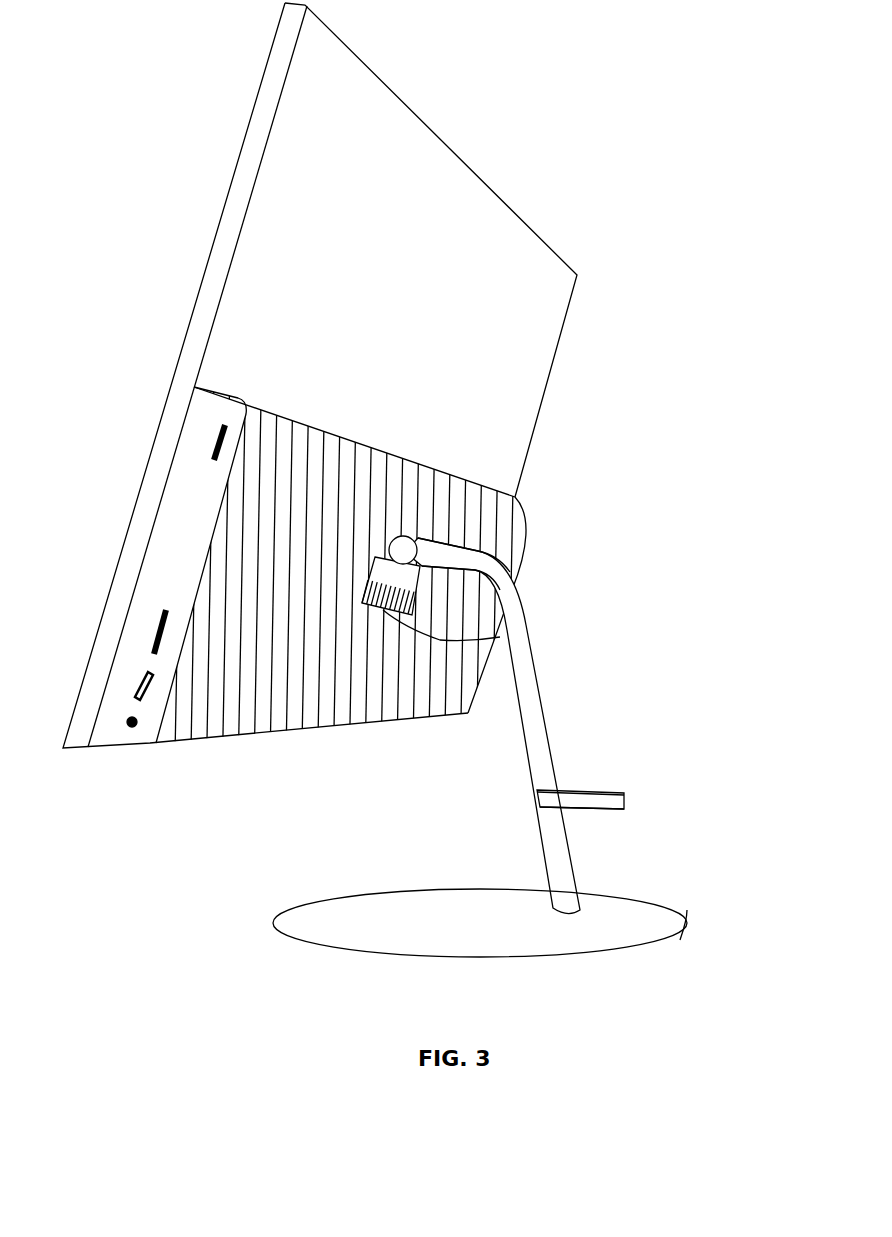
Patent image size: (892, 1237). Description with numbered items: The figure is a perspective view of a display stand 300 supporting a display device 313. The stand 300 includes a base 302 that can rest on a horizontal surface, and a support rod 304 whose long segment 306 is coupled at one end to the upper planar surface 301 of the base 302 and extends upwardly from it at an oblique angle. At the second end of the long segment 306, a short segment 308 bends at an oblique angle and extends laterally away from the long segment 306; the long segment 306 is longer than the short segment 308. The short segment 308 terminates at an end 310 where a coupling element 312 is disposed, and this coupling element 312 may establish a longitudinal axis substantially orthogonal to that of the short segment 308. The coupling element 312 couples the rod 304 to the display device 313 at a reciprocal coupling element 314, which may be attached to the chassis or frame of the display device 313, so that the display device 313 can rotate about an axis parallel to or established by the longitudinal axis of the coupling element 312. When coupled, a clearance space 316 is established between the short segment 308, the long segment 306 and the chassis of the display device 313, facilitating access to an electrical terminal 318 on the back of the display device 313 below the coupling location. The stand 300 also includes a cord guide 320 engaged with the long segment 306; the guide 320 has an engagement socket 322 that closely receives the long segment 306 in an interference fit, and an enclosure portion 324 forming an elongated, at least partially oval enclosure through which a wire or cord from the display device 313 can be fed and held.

The display stand 300 is at (727, 723).
The upper planar surface 301 is at (397, 905).
The base 302 is at (687, 920).
The support rod 304 is at (541, 694).
The long segment 306 is at (545, 714).
The short segment 308 is at (493, 565).
The end 310 is at (450, 538).
The coupling element 312 is at (427, 545).
The display device 313 is at (550, 331).
The reciprocal coupling element 314 is at (402, 536).
The clearance space 316 is at (437, 642).
The electrical terminal 318 is at (372, 587).
The cord guide 320 is at (603, 780).
The engagement socket 322 is at (530, 788).
The enclosure portion 324 is at (586, 828).